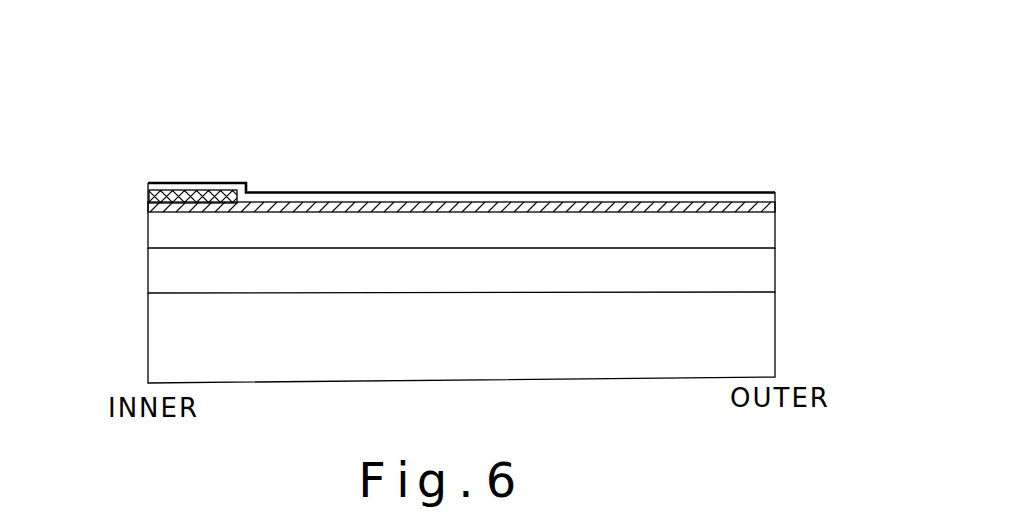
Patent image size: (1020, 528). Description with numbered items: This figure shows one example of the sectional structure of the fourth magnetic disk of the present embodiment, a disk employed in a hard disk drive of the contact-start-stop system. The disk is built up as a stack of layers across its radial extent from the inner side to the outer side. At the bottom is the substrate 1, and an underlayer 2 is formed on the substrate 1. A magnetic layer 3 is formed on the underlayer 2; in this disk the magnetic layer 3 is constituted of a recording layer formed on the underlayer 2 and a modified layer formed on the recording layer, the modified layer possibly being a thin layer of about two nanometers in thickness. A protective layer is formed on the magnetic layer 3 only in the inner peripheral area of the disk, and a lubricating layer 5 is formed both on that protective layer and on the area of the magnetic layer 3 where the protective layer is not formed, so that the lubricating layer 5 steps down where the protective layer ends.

The substrate 1 is at (758, 342).
The underlayer 2 is at (758, 273).
The magnetic layer 3 is at (521, 212).
The lubricating layer 5 is at (238, 183).